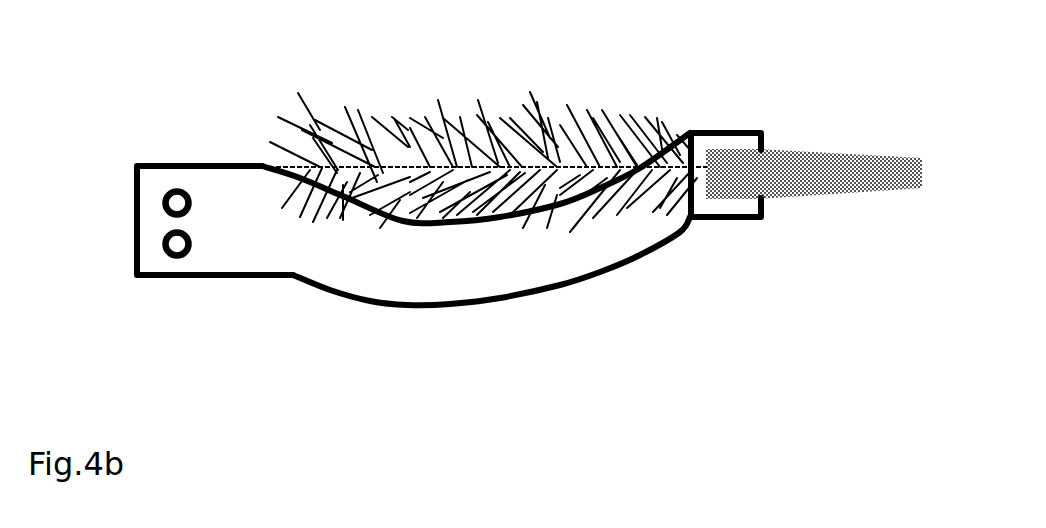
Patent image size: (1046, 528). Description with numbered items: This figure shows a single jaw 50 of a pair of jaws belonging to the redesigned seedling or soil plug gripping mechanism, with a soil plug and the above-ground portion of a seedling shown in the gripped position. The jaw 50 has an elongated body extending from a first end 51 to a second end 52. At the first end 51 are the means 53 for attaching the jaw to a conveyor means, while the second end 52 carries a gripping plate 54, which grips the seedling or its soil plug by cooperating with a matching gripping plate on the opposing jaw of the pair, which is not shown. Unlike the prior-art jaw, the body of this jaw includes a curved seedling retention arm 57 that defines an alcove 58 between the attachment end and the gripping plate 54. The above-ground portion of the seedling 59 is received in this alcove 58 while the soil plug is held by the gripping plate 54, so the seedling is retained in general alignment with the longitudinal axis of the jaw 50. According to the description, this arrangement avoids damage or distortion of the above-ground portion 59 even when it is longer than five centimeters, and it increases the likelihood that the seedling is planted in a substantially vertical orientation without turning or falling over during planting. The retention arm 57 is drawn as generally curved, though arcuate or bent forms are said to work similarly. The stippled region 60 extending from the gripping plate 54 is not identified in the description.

The jaw 50 is at (168, 88).
The first end 51 is at (166, 267).
The second end 52 is at (742, 222).
The means for attaching the jaw to a conveyor means 53 is at (163, 200).
The gripping plate 54 is at (725, 211).
The curved seedling retention arm 57 is at (480, 267).
The alcove 58 is at (423, 223).
The above-ground portion of the seedling 59 is at (680, 85).
The light beam 60 is at (918, 105).